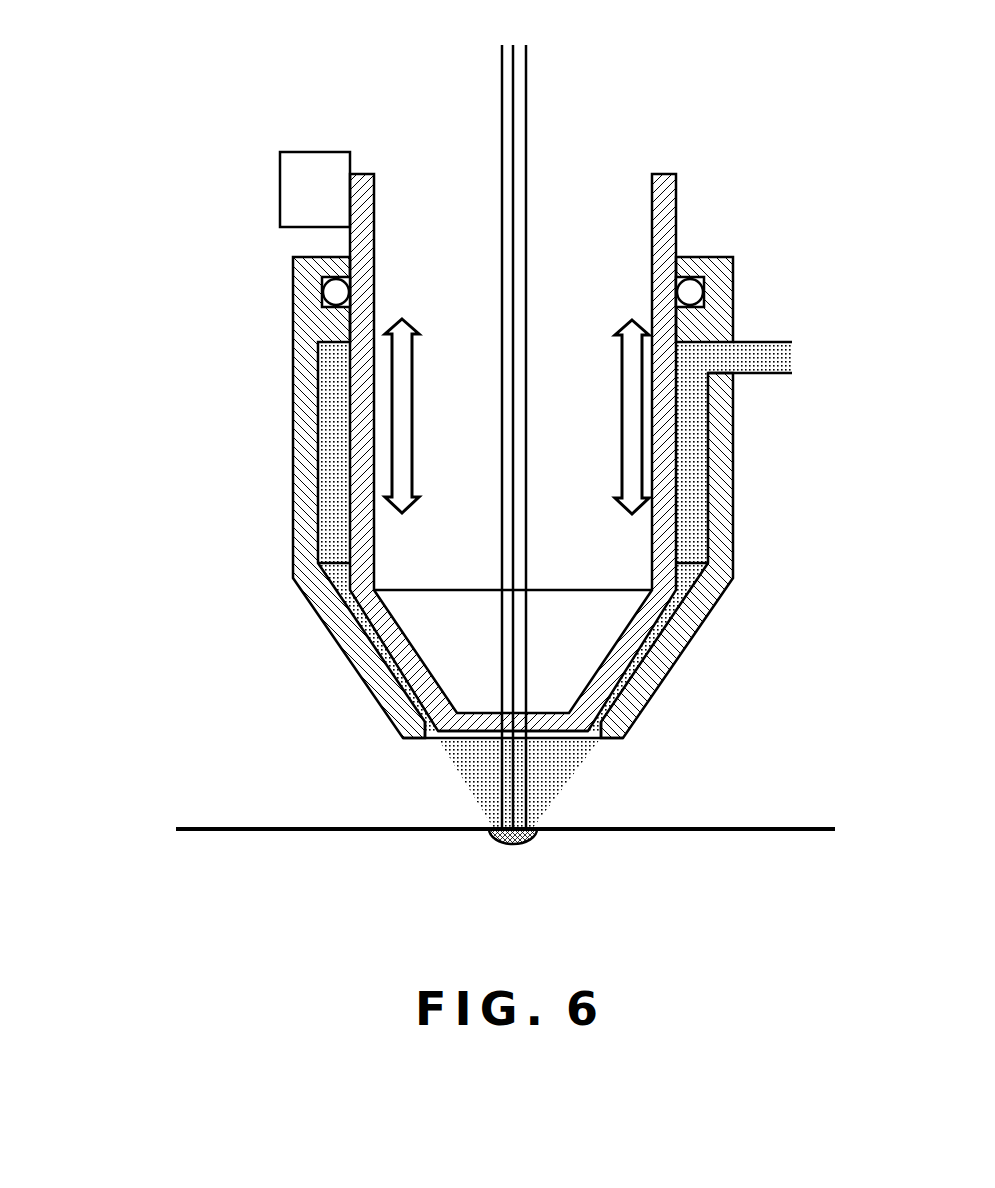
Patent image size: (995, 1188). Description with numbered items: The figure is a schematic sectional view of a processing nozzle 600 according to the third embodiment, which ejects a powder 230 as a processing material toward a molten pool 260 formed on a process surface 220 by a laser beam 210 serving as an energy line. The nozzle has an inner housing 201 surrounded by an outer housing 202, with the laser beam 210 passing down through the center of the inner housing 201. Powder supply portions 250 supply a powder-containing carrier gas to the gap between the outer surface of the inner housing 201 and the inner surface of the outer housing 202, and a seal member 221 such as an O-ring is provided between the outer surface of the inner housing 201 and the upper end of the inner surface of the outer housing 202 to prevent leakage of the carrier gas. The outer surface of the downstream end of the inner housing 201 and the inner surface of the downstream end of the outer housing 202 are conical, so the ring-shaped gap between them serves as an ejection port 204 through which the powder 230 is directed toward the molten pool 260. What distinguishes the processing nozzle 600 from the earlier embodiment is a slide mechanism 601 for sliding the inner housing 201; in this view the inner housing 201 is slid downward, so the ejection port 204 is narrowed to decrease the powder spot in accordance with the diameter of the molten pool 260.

The processing nozzle 600 is at (168, 106).
The slide mechanism 601 is at (298, 193).
The laser beam 210 is at (527, 164).
The inner housing 201 is at (677, 219).
The seal member 221 is at (700, 296).
The outer housing 202 is at (733, 318).
The powder supply portion 250 is at (760, 362).
The process surface 220 is at (204, 829).
The powder 230 is at (477, 780).
The ejection port 204 is at (588, 738).
The molten pool 260 is at (525, 843).